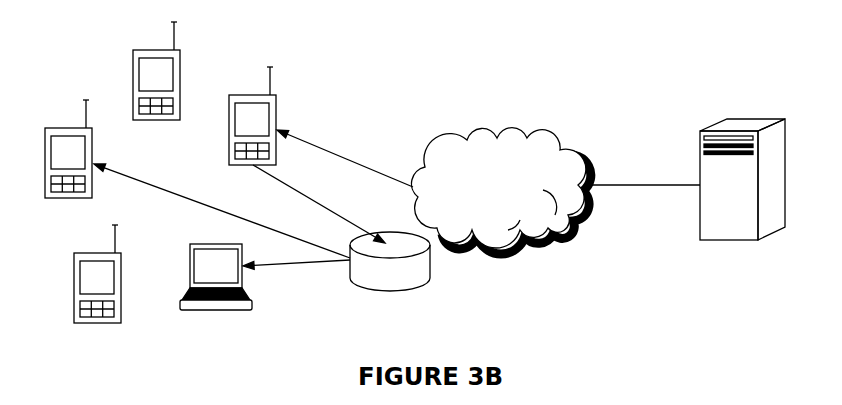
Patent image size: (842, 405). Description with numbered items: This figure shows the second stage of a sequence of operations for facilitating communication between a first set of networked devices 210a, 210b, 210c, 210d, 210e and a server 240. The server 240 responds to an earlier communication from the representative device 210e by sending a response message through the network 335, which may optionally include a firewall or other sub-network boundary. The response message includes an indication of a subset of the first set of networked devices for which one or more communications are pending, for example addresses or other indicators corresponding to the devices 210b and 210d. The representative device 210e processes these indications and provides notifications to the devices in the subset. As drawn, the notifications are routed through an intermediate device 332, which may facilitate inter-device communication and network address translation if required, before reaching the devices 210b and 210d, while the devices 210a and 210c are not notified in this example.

The networked device 210a is at (150, 70).
The networked device 210b is at (62, 148).
The networked device 210c is at (92, 273).
The networked device 210d is at (216, 264).
The representative device 210e is at (246, 115).
The intermediate device 332 is at (390, 274).
The network 335 is at (501, 183).
The server 240 is at (742, 163).